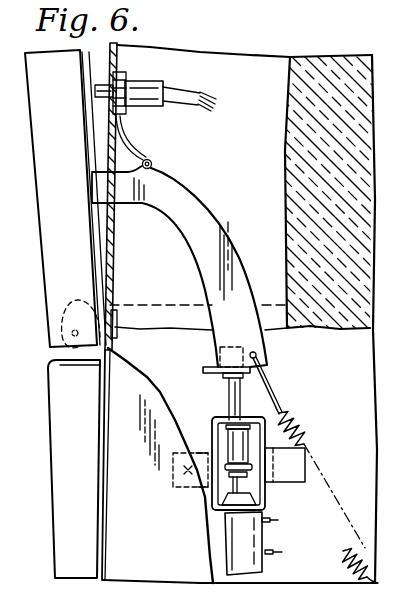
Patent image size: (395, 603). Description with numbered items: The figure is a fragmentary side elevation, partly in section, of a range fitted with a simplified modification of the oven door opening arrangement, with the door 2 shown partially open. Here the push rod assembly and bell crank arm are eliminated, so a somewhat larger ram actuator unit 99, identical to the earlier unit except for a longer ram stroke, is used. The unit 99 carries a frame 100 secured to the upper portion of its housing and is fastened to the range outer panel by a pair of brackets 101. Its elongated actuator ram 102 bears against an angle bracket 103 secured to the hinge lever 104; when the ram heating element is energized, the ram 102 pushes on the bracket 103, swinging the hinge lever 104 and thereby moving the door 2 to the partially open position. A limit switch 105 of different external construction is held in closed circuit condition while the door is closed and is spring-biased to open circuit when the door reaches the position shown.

The door frame / wall structure 2 is at (160, 520).
The ram actuator unit 99 is at (262, 538).
The frame 100 is at (213, 428).
The brackets 101 is at (305, 462).
The actuator ram 102 is at (228, 390).
The angle bracket 103 is at (230, 347).
The hinge lever 104 is at (224, 221).
The limit switch 105 is at (147, 109).